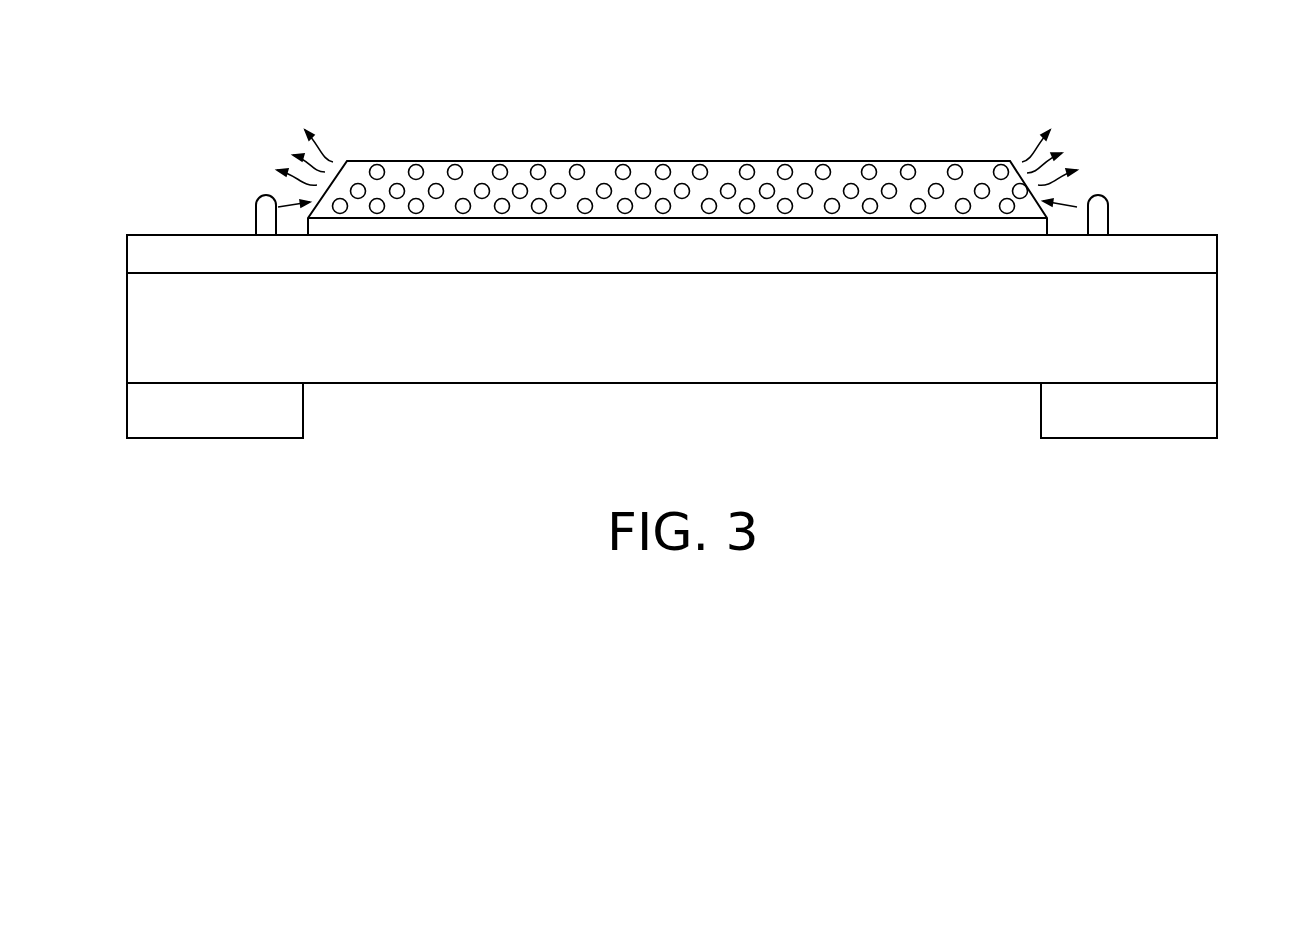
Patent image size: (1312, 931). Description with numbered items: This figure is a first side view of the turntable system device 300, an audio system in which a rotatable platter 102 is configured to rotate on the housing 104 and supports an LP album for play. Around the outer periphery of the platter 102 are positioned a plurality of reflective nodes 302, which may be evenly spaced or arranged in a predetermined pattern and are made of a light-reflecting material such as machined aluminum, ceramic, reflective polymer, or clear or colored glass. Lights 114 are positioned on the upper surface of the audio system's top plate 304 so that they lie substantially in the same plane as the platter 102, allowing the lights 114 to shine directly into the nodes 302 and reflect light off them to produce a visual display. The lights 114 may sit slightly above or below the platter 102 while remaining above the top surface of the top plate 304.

The light emitting device assembly 300 is at (1087, 67).
The reflective nodes 302 is at (682, 185).
The rotatable platter 102 is at (853, 150).
The light 114 is at (252, 190).
The top plate 304 is at (1168, 227).
The housing 104 is at (1217, 327).